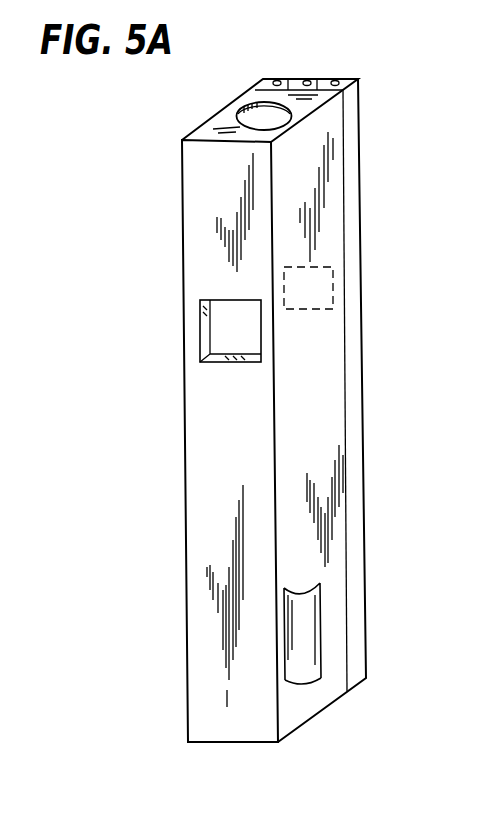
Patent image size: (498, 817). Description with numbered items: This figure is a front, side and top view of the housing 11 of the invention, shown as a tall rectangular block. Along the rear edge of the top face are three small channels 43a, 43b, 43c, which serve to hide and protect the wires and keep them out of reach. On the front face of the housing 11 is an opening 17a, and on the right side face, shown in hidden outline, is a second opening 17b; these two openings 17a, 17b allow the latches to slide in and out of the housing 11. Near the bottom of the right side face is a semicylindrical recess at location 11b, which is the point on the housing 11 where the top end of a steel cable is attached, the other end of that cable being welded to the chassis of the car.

The housing 11 is at (183, 193).
The attachment point on housing 11b is at (318, 678).
The opening 17a is at (218, 330).
The opening 17b is at (333, 303).
The channel 43a is at (280, 80).
The channel 43b is at (318, 63).
The channel 43c is at (337, 80).